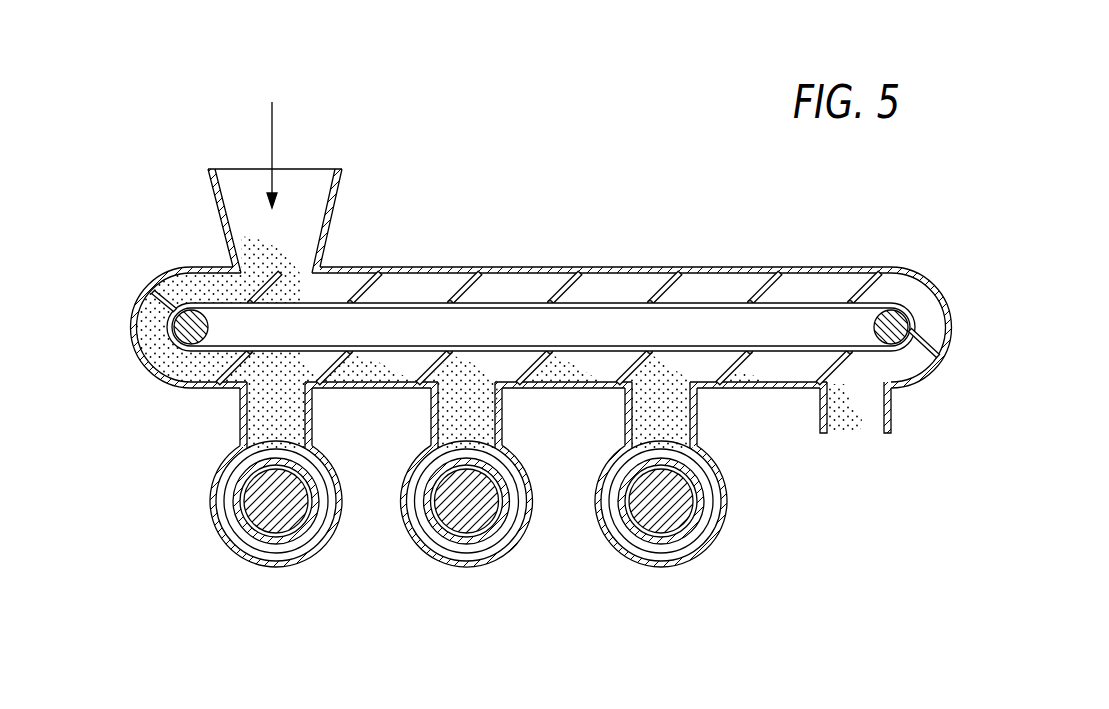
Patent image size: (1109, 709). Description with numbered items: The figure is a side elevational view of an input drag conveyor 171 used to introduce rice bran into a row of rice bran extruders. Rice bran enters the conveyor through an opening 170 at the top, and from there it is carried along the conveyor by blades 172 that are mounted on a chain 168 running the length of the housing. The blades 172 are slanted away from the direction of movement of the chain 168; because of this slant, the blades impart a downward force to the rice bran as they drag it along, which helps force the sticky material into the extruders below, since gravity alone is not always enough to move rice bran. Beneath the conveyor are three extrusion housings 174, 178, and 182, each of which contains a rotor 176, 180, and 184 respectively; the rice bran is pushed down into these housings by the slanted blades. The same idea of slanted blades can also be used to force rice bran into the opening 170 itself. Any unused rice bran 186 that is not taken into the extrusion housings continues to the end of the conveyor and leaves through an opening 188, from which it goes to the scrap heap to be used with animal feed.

The chain 168 is at (425, 305).
The opening 170 is at (305, 187).
The input drag conveyor 171 is at (612, 233).
The blades 172 is at (190, 383).
The extrusion housing 174 is at (211, 479).
The rotor 176 is at (238, 525).
The extrusion housing 178 is at (403, 523).
The rotor 180 is at (455, 530).
The extrusion housing 182 is at (607, 542).
The rotor 184 is at (658, 535).
The unused rice bran 186 is at (770, 390).
The opening 188 is at (870, 410).